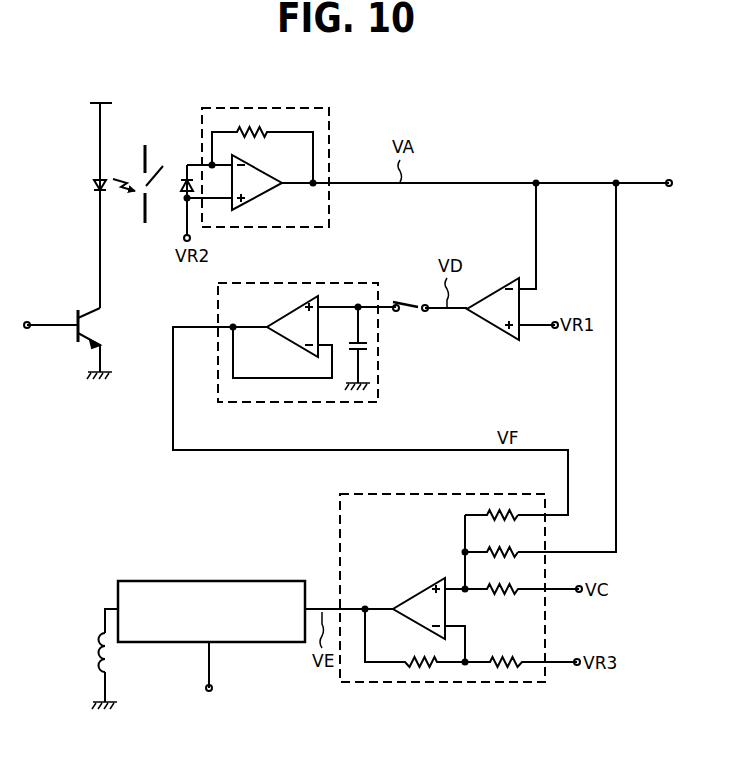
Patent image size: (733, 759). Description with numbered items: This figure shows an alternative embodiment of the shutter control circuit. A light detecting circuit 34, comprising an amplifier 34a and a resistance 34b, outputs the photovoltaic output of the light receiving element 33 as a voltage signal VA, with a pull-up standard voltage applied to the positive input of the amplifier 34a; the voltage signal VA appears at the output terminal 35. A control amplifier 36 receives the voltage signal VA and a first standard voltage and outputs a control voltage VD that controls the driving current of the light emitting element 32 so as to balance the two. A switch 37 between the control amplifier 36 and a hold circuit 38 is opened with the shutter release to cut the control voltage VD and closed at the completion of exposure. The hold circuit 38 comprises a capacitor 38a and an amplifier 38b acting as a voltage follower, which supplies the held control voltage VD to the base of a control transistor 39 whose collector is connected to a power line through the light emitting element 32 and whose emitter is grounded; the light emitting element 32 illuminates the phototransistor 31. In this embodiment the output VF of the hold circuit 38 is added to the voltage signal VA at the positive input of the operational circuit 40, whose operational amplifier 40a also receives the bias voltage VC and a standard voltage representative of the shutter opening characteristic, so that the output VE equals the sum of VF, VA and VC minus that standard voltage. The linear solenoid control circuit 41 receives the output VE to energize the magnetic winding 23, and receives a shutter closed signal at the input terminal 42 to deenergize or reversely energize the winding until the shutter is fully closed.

The magnetic winding 23 is at (110, 658).
The phototransistor 31 is at (163, 166).
The light emitting element 32 is at (96, 182).
The light receiving element 33 is at (146, 193).
The light detecting circuit 34 is at (329, 122).
The amplifier 34a is at (268, 189).
The resistance 34b is at (248, 127).
The output terminal 35 is at (667, 178).
The control amplifier 36 is at (496, 284).
The switch 37 is at (406, 300).
The hold circuit 38 is at (343, 283).
The capacitor 38a is at (368, 350).
The amplifier 38b is at (281, 342).
The control transistor 39 is at (94, 325).
The operational circuit 40 is at (432, 683).
The operational amplifier 40a is at (411, 593).
The linear solenoid control circuit 41 is at (208, 581).
The input terminal 42 is at (209, 695).